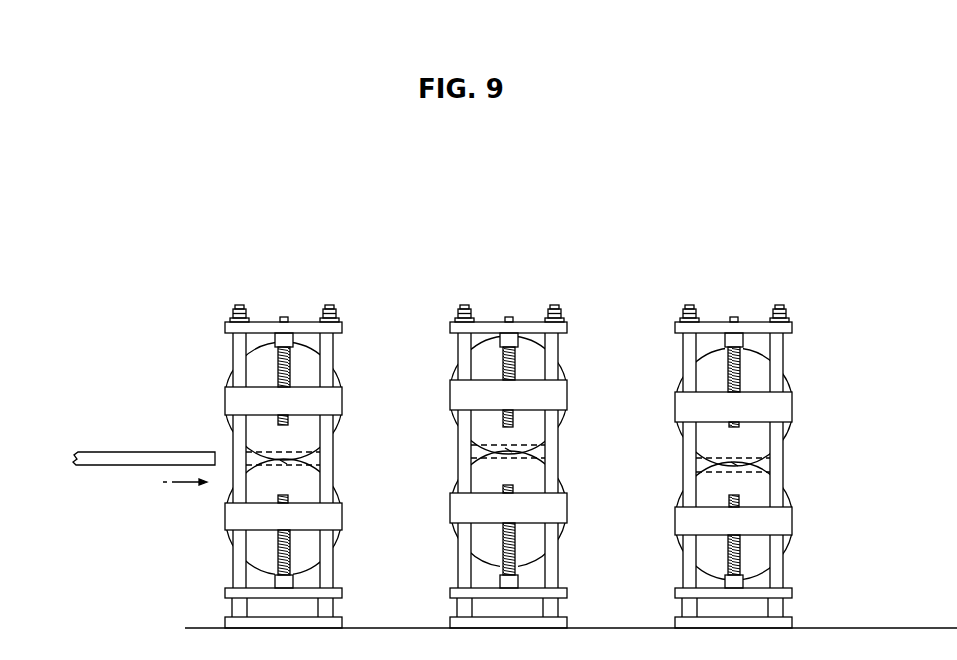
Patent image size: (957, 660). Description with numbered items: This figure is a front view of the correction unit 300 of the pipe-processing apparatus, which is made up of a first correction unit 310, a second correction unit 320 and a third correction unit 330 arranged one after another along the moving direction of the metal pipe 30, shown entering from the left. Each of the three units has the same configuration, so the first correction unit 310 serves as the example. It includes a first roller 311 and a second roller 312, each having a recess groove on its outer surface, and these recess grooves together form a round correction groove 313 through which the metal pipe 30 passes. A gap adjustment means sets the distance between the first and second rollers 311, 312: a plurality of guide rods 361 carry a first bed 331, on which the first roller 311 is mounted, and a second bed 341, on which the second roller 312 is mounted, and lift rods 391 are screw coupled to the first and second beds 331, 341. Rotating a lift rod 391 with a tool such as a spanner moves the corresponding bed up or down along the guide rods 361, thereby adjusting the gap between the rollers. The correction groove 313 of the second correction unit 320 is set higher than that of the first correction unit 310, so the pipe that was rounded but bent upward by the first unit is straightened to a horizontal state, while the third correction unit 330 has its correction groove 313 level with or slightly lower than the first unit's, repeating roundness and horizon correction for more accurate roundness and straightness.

The correction unit 300 is at (552, 228).
The first correction unit 310 is at (210, 355).
The second correction unit 320 is at (435, 352).
The third correction unit 330 is at (658, 340).
The metal pipe 30 is at (168, 450).
The first roller 311 is at (310, 430).
The second roller 312 is at (313, 485).
The correction groove 313 is at (283, 462).
The first bed 331 is at (332, 397).
The second bed 341 is at (333, 518).
The guide rod 361 is at (328, 342).
The lift rod 391 is at (278, 355).